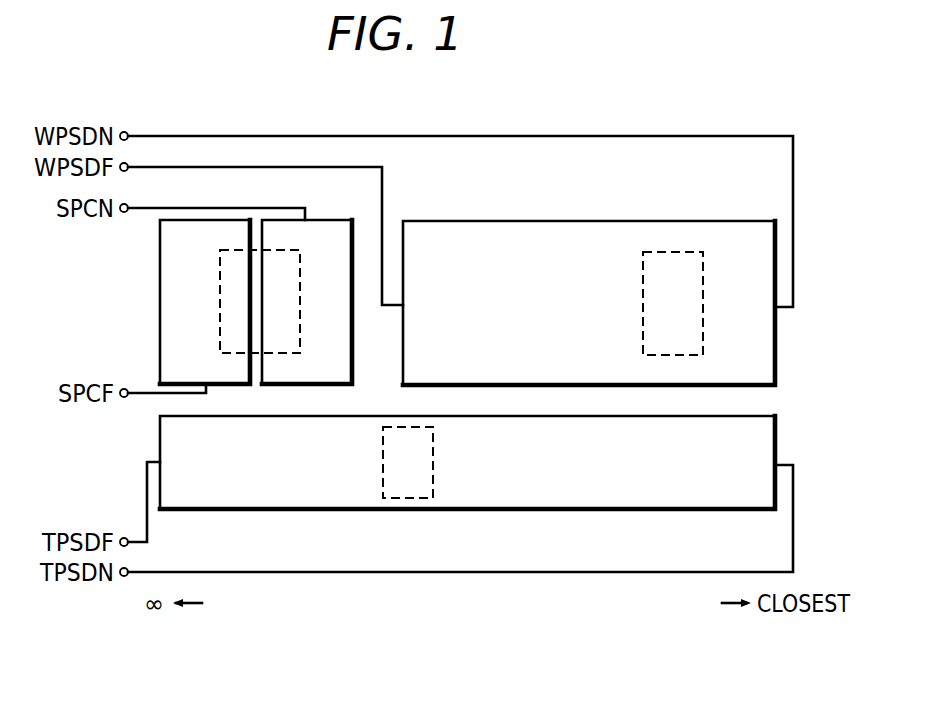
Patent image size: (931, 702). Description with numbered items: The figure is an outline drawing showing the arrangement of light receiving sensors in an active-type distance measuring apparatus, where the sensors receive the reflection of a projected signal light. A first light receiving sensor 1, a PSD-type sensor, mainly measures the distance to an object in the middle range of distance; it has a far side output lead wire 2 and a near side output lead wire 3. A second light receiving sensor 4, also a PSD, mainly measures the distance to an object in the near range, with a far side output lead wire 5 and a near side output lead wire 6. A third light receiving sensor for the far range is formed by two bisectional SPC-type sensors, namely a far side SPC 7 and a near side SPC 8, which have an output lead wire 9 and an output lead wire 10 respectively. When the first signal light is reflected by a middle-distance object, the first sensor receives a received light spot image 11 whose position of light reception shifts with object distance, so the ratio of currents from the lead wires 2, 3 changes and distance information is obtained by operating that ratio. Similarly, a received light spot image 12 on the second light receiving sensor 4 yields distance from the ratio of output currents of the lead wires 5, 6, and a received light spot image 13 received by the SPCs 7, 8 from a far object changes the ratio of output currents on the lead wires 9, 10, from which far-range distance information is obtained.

The first light receiving sensor 1 is at (760, 512).
The far side output lead wire 2 is at (145, 533).
The near side output lead wire 3 is at (163, 572).
The second light receiving sensor 4 is at (757, 221).
The far side output lead wire 5 is at (362, 167).
The near side output lead wire 6 is at (645, 136).
The far side SPC 7 is at (237, 219).
The near side SPC 8 is at (342, 220).
The output lead wire 9 is at (142, 390).
The output lead wire 10 is at (205, 207).
The received light spot image 11 is at (422, 498).
The received light spot image 12 is at (692, 252).
The received light spot image 13 is at (283, 250).